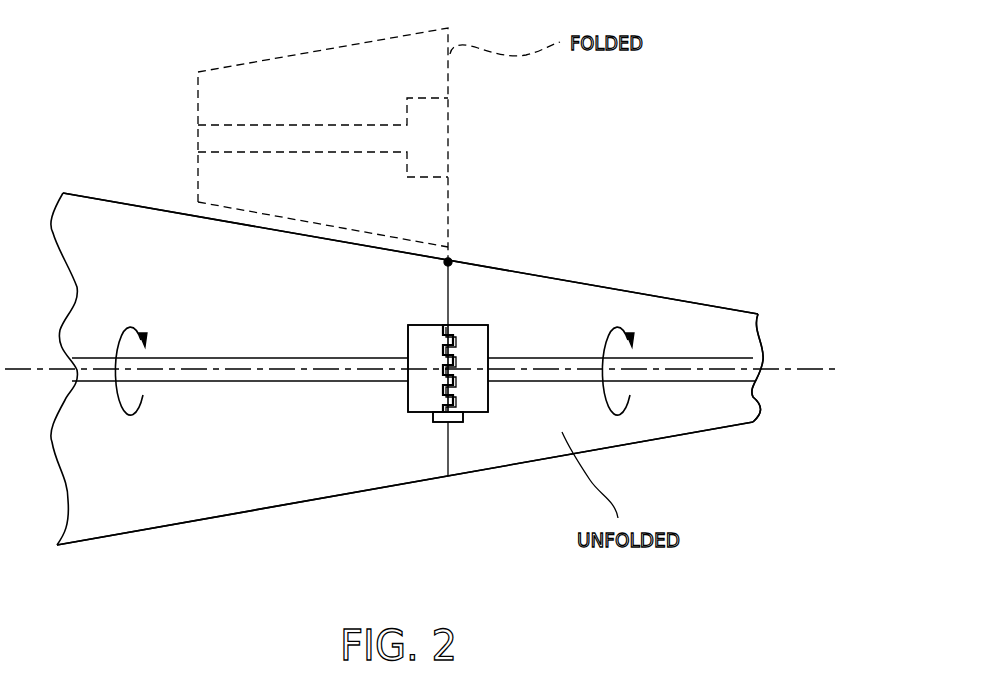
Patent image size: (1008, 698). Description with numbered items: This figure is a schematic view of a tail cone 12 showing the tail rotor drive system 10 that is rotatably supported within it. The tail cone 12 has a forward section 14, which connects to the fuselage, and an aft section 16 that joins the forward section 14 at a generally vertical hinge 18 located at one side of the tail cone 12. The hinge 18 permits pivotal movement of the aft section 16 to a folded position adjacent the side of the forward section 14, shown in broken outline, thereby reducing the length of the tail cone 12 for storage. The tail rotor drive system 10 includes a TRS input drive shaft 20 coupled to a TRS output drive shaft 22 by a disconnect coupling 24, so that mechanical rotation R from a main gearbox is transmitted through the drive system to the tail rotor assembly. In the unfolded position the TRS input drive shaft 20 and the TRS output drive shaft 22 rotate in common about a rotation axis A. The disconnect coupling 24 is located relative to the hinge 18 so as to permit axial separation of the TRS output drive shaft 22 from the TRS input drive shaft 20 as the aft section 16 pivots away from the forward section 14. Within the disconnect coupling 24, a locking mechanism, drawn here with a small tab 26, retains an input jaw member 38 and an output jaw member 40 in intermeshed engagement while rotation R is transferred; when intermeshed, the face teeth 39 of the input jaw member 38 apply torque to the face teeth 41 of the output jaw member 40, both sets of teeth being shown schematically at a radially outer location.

The tail rotor drive system 10 is at (121, 584).
The tail cone 12 is at (640, 260).
The forward section 14 is at (225, 517).
The aft section 16 is at (688, 433).
The hinge 18 is at (450, 260).
The TRS input drive shaft 20 is at (238, 358).
The TRS output drive shaft 22 is at (693, 358).
The disconnect coupling 24 is at (418, 430).
The tab 26 is at (450, 424).
The input jaw member 38 is at (432, 335).
The face teeth 39 is at (452, 345).
The output jaw member 40 is at (478, 340).
The face teeth 41 is at (452, 377).
The rotation axis A is at (817, 369).
The mechanical rotation R is at (120, 335).